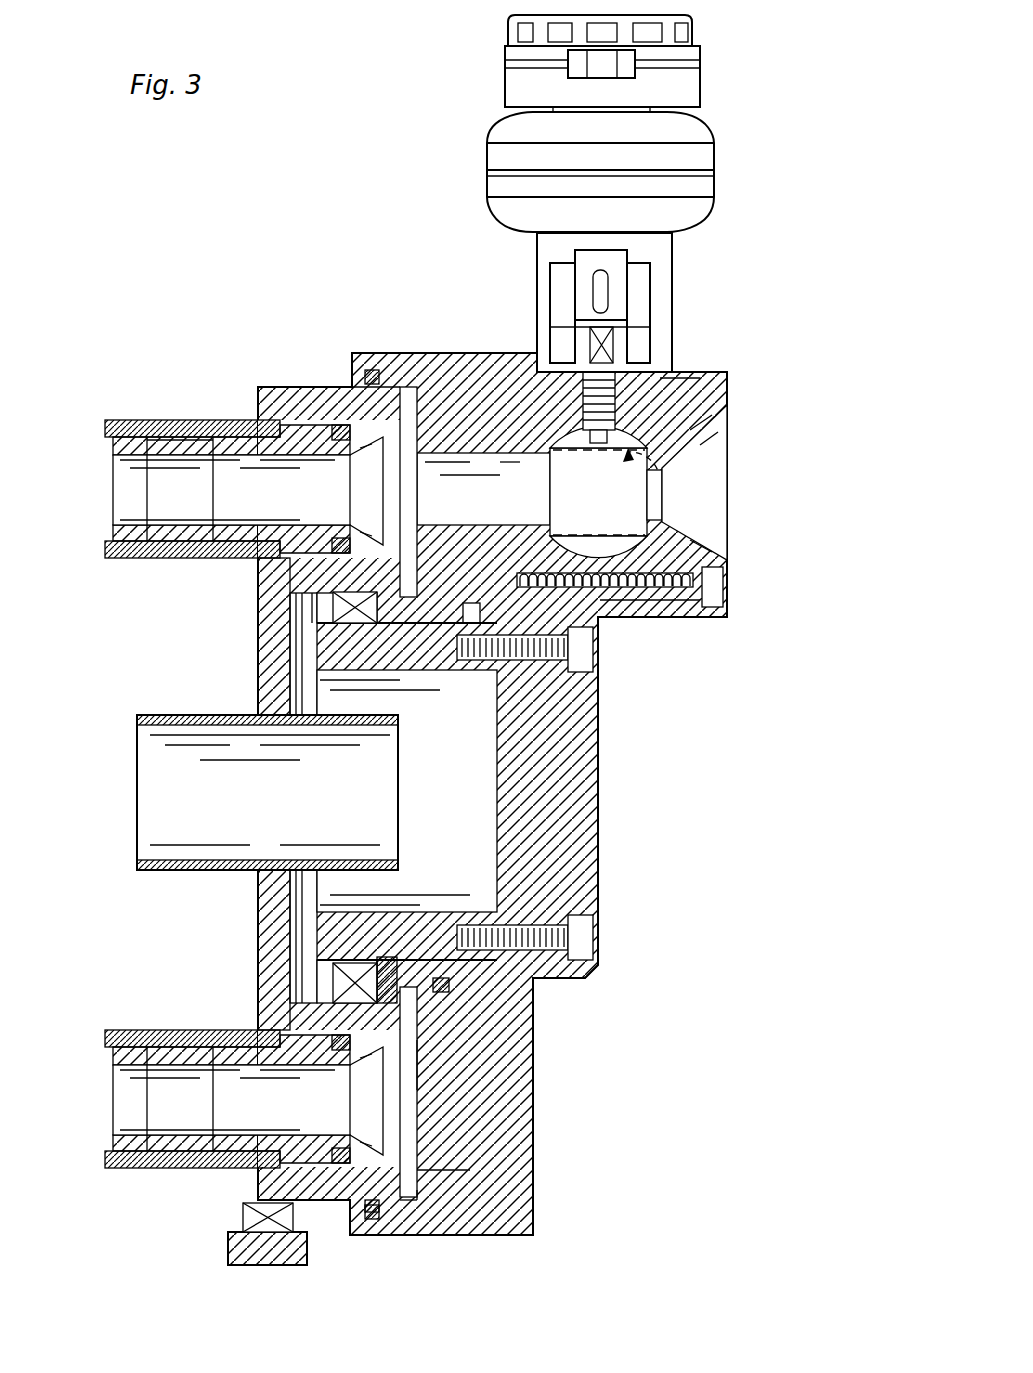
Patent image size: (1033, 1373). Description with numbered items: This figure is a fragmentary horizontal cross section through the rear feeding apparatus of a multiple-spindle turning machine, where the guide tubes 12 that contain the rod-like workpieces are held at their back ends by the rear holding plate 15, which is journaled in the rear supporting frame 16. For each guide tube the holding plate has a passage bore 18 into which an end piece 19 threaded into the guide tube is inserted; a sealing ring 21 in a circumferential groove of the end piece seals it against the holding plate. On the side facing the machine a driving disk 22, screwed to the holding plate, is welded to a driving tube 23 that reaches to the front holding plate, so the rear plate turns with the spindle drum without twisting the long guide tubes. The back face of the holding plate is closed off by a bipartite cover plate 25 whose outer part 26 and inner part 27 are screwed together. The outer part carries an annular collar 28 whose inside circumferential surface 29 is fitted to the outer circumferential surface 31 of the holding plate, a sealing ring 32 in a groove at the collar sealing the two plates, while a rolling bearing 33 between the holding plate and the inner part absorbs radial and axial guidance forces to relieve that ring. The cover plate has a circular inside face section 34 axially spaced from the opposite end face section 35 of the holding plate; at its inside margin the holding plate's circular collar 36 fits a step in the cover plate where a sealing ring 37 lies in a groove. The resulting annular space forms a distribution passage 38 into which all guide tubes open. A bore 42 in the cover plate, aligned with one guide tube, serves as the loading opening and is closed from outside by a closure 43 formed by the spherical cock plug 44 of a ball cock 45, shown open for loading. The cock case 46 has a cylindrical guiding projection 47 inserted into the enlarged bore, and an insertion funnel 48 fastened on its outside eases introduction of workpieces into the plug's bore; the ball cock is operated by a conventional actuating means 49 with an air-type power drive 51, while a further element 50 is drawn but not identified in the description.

The guide tube 12 is at (160, 415).
The rear holding plate 15 is at (298, 380).
The rear supporting frame 16 is at (225, 1250).
The passage bore 18 is at (353, 425).
The end piece 19 is at (248, 445).
The sealing ring 21 is at (338, 423).
The driving disk 22 is at (268, 588).
The driving tube 23 is at (198, 712).
The cover plate 25 is at (438, 350).
The outer part 26 is at (530, 1236).
The inner part 27 is at (415, 935).
The annular collar 28 is at (405, 1215).
The inside circumferential surface 29 is at (415, 1182).
The outer circumferential surface 31 is at (328, 1205).
The sealing ring 32 is at (372, 1237).
The rolling bearing 33 is at (345, 950).
The inside face section 34 is at (420, 1172).
The end face section 35 is at (405, 1062).
The collar 36 is at (450, 985).
The sealing ring 37 is at (440, 1003).
The distribution passage 38 is at (405, 455).
The bore 42 is at (505, 492).
The closure 43 is at (660, 385).
The cock plug 44 is at (617, 578).
The ball cock 45 is at (648, 622).
The cock case 46 is at (662, 606).
The guiding projection 47 is at (528, 430).
The insertion funnel 48 is at (708, 410).
The actuating means 49 is at (583, 193).
The flow direction 50 is at (720, 468).
The power drive 51 is at (690, 130).